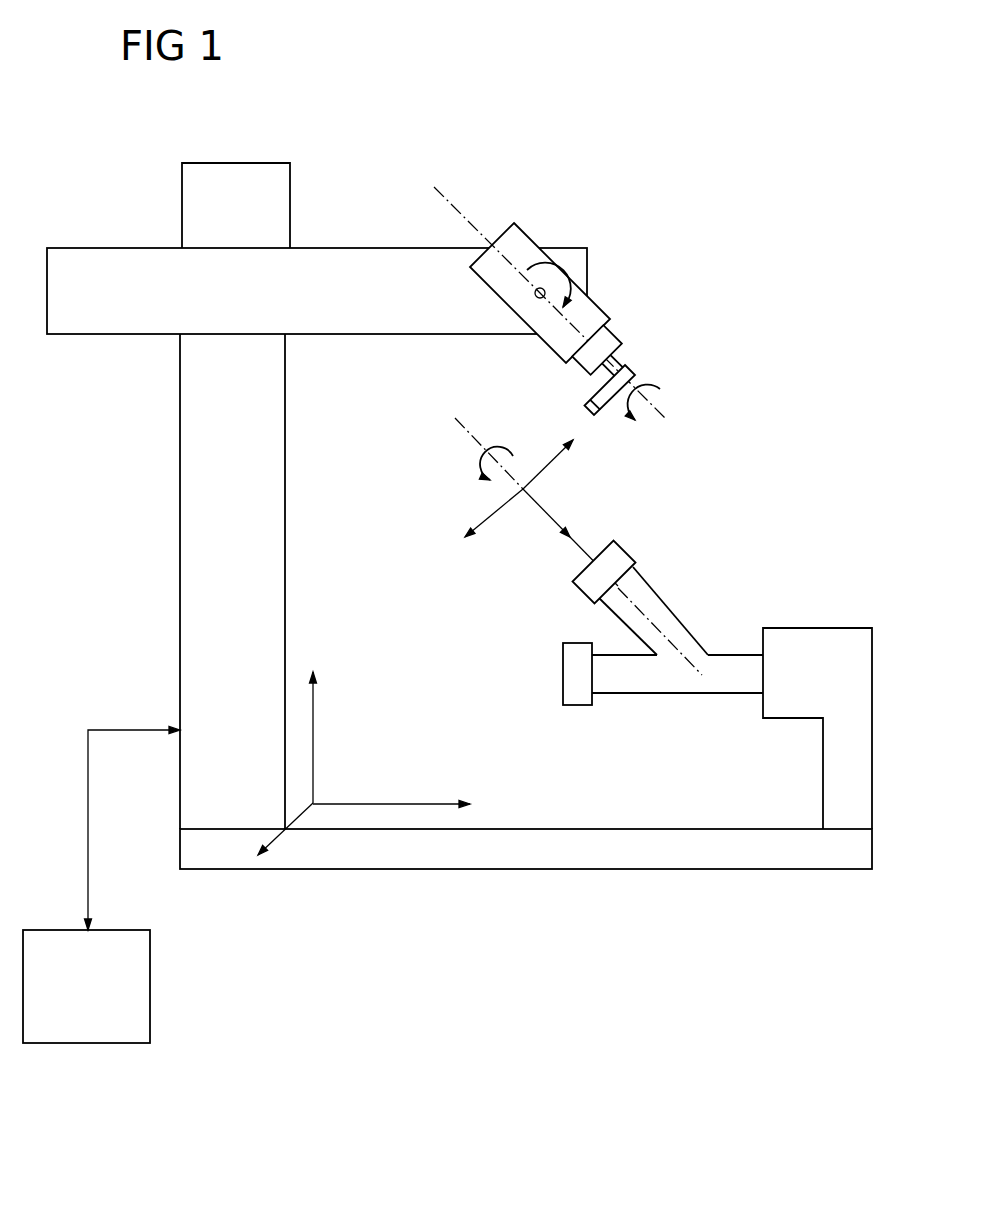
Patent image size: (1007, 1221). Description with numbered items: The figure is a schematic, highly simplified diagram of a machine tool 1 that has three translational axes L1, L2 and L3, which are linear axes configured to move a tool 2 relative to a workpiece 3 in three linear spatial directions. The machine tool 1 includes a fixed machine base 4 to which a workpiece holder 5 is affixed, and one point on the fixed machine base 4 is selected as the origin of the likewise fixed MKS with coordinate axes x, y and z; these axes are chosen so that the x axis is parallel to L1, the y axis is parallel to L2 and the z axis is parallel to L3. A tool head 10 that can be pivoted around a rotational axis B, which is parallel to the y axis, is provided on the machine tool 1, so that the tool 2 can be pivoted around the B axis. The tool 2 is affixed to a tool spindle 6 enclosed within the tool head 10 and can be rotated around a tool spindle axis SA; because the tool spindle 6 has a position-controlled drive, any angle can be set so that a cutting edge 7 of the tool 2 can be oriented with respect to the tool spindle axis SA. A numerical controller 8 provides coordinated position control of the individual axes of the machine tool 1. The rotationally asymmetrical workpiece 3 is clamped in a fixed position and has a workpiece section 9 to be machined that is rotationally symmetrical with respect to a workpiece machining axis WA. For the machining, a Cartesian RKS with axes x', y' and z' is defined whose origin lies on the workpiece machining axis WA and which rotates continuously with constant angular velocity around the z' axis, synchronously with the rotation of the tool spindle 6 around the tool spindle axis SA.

The machine tool 1 is at (459, 512).
The tool 2 is at (625, 363).
The workpiece 3 is at (660, 607).
The machine base 4 is at (688, 857).
The workpiece holder 5 is at (823, 633).
The tool spindle 6 is at (607, 337).
The cutting edge 7 is at (583, 413).
The numerical controller 8 is at (152, 990).
The workpiece section 9 is at (625, 552).
The tool head 10 is at (560, 352).
The tool spindle axis SA is at (435, 185).
The workpiece machining axis WA is at (477, 447).
The rotational axis B is at (523, 310).
The translational axis L1 is at (235, 215).
The translational axis L2 is at (232, 810).
The translational axis L3 is at (147, 292).
The machine coordinate system MKS is at (340, 785).
The rotating coordinate system RKS is at (555, 493).